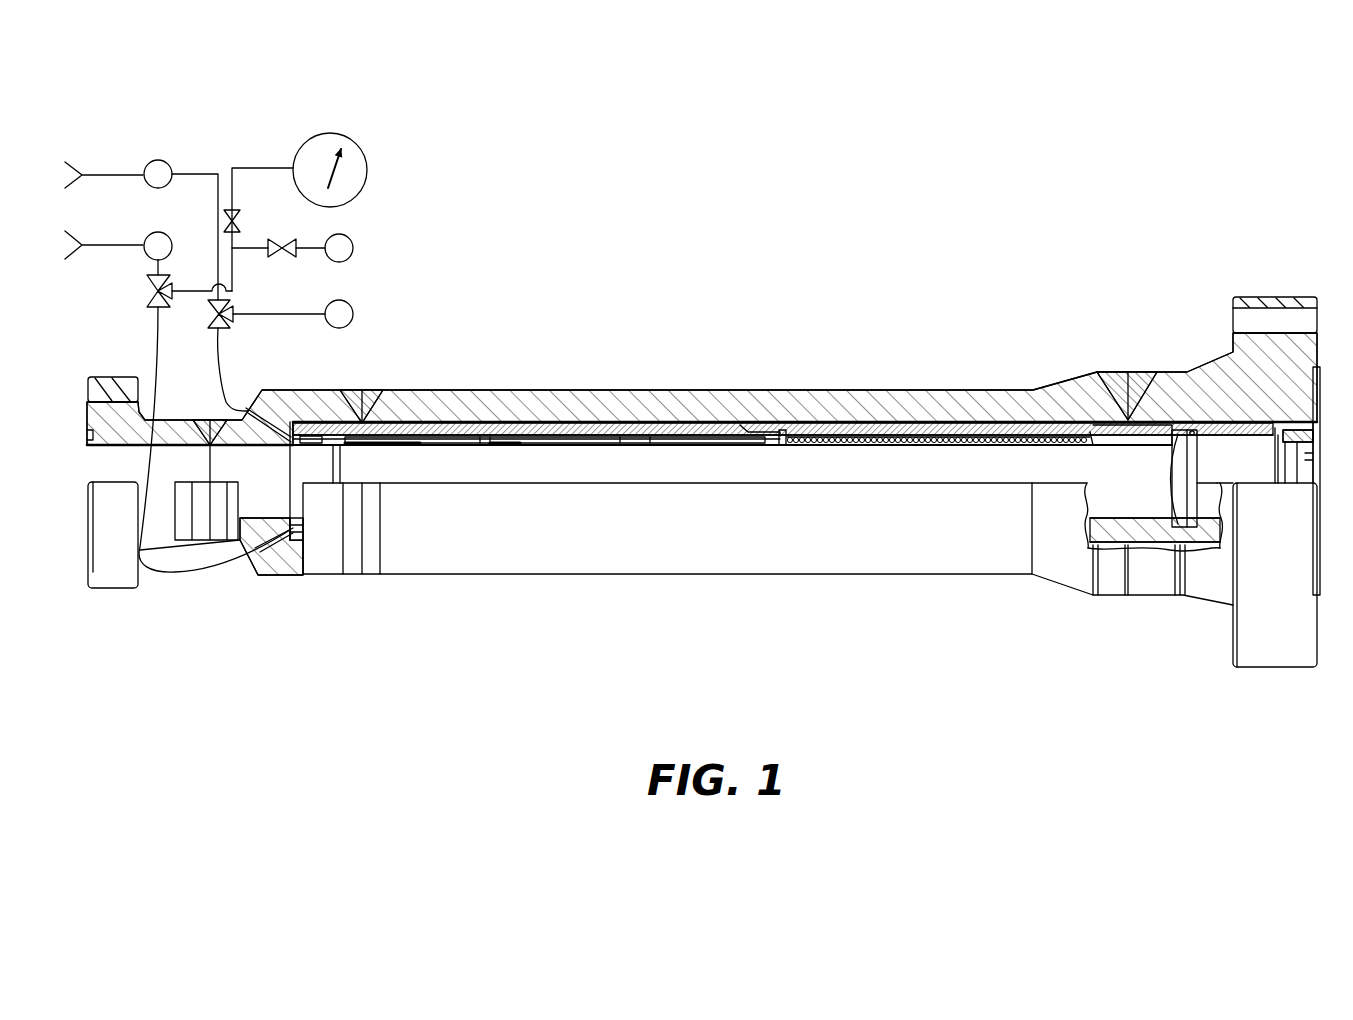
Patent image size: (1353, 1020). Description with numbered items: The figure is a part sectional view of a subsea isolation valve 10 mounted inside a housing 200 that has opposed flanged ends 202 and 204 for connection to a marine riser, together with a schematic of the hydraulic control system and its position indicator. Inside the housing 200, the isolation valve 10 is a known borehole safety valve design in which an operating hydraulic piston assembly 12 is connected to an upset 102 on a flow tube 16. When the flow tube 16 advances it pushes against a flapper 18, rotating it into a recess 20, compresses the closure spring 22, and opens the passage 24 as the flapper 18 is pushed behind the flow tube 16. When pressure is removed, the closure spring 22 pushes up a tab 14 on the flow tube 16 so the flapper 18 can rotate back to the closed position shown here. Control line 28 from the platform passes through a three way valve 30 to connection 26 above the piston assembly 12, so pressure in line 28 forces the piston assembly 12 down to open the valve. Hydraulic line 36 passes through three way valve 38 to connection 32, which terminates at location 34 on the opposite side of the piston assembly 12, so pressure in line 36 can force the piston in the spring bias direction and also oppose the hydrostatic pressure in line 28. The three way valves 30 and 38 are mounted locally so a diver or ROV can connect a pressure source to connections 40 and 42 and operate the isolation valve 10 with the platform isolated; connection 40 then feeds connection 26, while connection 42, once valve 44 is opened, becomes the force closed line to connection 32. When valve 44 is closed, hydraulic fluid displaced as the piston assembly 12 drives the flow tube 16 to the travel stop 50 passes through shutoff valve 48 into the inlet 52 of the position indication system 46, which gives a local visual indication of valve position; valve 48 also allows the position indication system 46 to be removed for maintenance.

The isolation valve 10 is at (790, 351).
The operating hydraulic piston assembly 12 is at (566, 420).
The tab 14 is at (783, 445).
The flow tube 16 is at (892, 446).
The flapper 18 is at (1195, 473).
The recess 20 is at (1238, 425).
The closure spring 22 is at (932, 439).
The passage 24 is at (1247, 464).
The connection 26 is at (262, 417).
The control line 28 is at (87, 174).
The three way valve 30 is at (234, 320).
The connection 32 is at (280, 530).
The location 34 is at (705, 439).
The hydraulic line 36 is at (88, 244).
The three way valve 38 is at (152, 297).
The connection 40 is at (353, 315).
The connection 42 is at (353, 248).
The valve 44 is at (288, 256).
The position indication system 46 is at (358, 160).
The shutoff valve 48 is at (242, 222).
The travel stop 50 is at (1290, 437).
The inlet 52 is at (270, 168).
The upset 102 is at (488, 443).
The housing 200 is at (582, 575).
The flanged end 202 is at (1273, 667).
The flanged end 204 is at (113, 589).